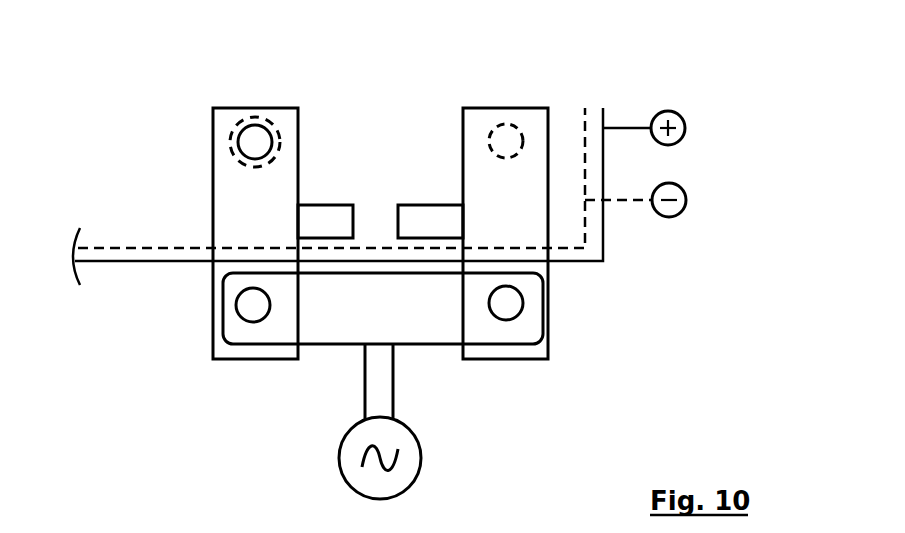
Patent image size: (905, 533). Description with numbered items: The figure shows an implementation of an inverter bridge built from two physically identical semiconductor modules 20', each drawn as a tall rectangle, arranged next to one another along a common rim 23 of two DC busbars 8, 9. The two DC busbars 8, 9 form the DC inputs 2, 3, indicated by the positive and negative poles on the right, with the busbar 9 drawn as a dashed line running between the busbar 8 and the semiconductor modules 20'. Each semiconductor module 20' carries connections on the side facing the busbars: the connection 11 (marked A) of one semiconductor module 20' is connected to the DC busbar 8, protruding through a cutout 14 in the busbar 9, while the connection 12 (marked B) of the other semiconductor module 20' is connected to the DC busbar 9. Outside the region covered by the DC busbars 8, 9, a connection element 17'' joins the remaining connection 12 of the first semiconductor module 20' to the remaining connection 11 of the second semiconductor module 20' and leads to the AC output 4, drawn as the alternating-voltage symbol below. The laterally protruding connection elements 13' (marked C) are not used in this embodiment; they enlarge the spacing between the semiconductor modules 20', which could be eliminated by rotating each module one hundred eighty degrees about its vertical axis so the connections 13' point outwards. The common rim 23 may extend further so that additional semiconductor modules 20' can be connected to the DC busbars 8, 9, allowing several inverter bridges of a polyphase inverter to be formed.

The DC input 2 is at (686, 118).
The DC input 3 is at (687, 195).
The AC output 4 is at (420, 472).
The DC busbar 8 is at (607, 254).
The DC busbar 9 is at (587, 221).
The connection 11 is at (238, 130).
The connection 12 is at (517, 122).
The connection element 13' is at (380, 166).
The cutout 14 is at (231, 151).
The connection element 17'' is at (383, 346).
The semiconductor module 20' is at (387, 282).
The common rim 23 is at (112, 268).